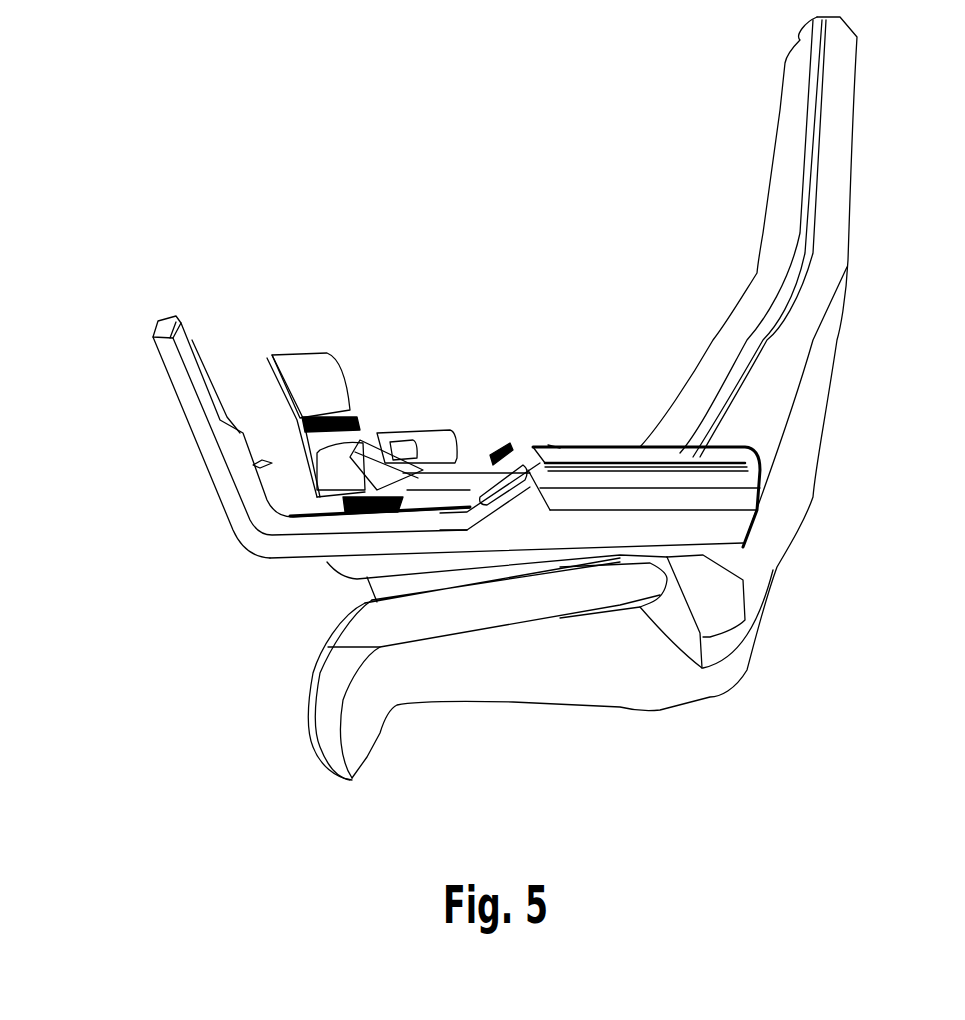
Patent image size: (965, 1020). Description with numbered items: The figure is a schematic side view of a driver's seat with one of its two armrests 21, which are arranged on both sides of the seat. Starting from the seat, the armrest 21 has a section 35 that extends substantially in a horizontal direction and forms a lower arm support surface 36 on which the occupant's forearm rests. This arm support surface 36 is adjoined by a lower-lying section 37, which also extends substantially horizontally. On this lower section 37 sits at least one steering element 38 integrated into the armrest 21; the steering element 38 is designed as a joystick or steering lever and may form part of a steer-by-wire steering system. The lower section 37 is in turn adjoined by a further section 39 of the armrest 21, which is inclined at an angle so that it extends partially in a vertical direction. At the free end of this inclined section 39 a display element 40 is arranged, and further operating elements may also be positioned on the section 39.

The armrest 21 is at (620, 448).
The section 35 is at (610, 478).
The lower arm support surface 36 is at (548, 445).
The lower section 37 is at (465, 472).
The steering element 38 is at (398, 432).
The section 39 is at (287, 400).
The display element 40 is at (303, 373).